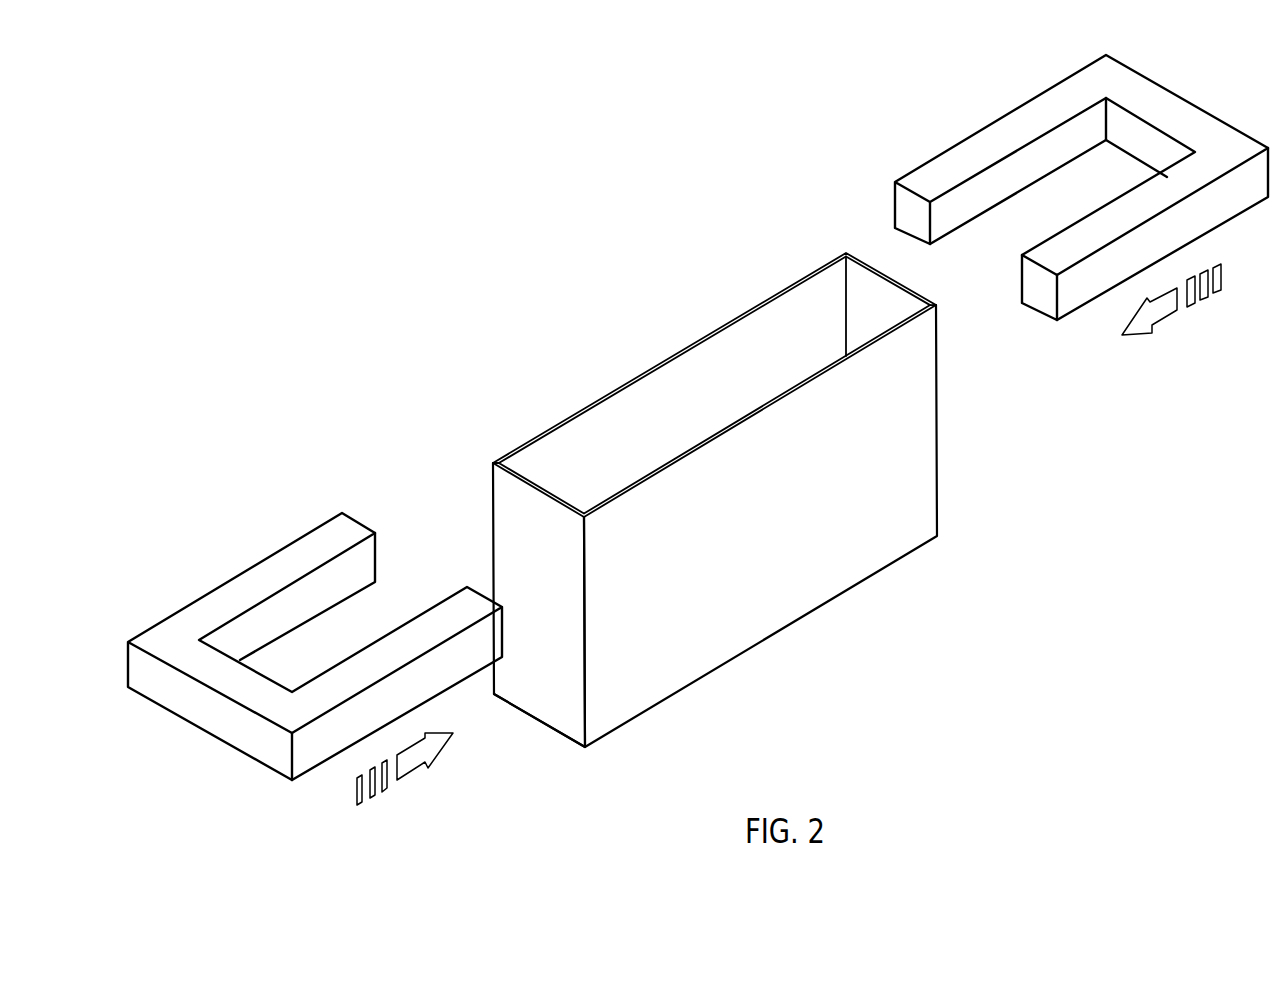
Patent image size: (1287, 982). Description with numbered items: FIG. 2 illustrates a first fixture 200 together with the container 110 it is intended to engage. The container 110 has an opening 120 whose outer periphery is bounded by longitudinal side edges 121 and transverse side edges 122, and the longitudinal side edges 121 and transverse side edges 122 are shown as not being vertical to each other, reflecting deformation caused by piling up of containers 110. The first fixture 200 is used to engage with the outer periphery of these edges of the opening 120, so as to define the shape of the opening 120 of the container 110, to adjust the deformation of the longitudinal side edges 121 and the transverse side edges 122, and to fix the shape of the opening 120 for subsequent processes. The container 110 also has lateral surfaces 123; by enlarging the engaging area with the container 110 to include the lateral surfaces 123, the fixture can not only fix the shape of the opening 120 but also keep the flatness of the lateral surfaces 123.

The container 110 is at (950, 430).
The opening 120 is at (741, 343).
The longitudinal side edges 121 is at (652, 358).
The transverse side edges 122 is at (535, 488).
The lateral surfaces 123 is at (793, 555).
The first fixture 200 is at (988, 137).